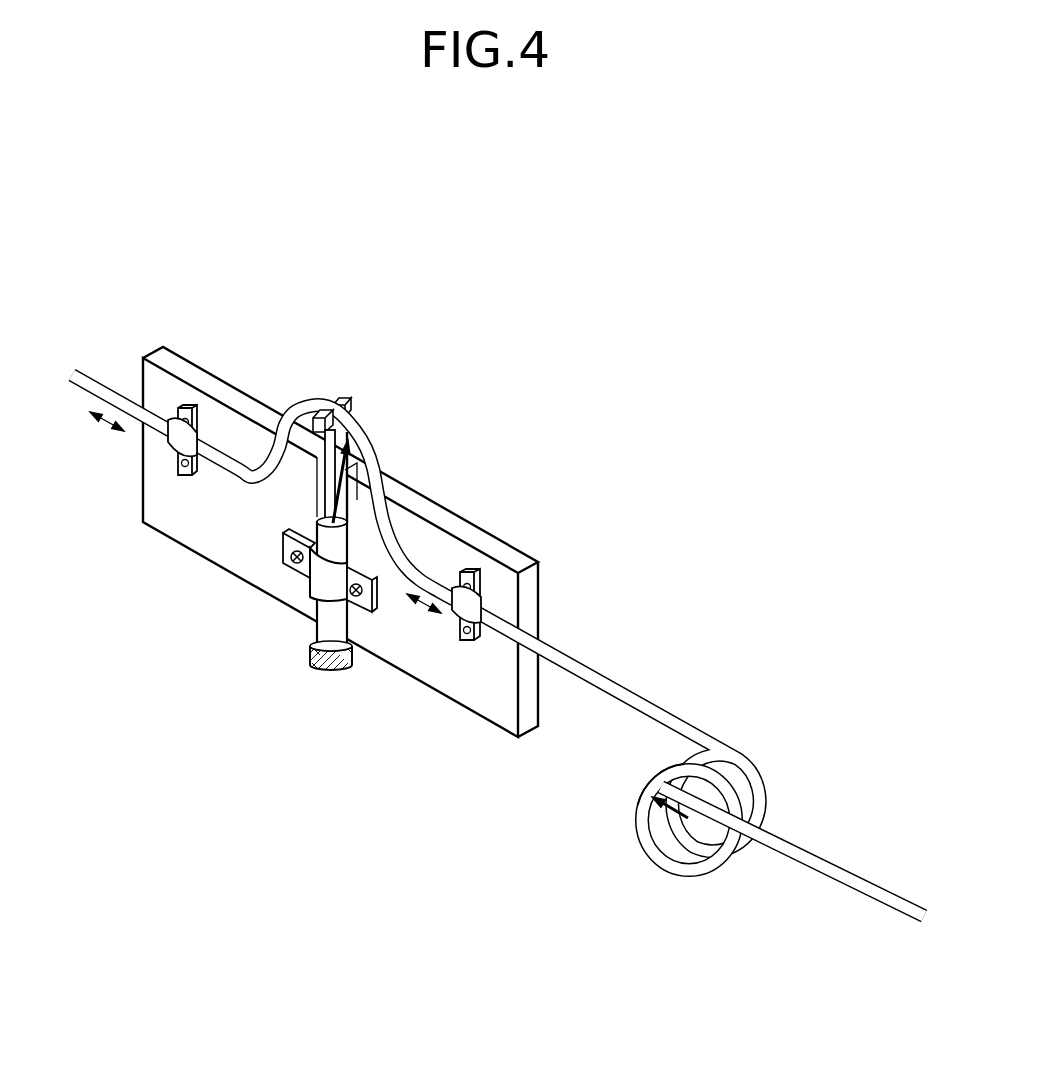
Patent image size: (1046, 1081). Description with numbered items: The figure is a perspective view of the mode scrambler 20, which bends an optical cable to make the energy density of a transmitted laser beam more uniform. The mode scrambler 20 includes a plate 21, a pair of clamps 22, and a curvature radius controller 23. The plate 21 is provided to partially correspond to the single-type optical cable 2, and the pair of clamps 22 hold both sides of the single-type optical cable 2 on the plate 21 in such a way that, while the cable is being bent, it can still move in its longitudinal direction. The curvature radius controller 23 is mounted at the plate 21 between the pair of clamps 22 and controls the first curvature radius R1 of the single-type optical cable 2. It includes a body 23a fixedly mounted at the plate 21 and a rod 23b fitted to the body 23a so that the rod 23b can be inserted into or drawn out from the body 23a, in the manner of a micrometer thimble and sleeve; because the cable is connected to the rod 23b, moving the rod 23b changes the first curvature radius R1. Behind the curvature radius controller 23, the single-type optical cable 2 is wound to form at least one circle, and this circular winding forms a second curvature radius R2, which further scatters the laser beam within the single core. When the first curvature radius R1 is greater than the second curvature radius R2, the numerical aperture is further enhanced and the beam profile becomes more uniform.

The single-type optical cable 2 is at (621, 681).
The mode scrambler 20 is at (498, 612).
The plate 21 is at (443, 521).
The clamps 22 is at (185, 410).
The curvature radius controller 23 is at (255, 558).
The body 23a is at (325, 538).
The rod 23b is at (337, 473).
The first curvature radius R1 is at (372, 489).
The second curvature radius R2 is at (677, 812).